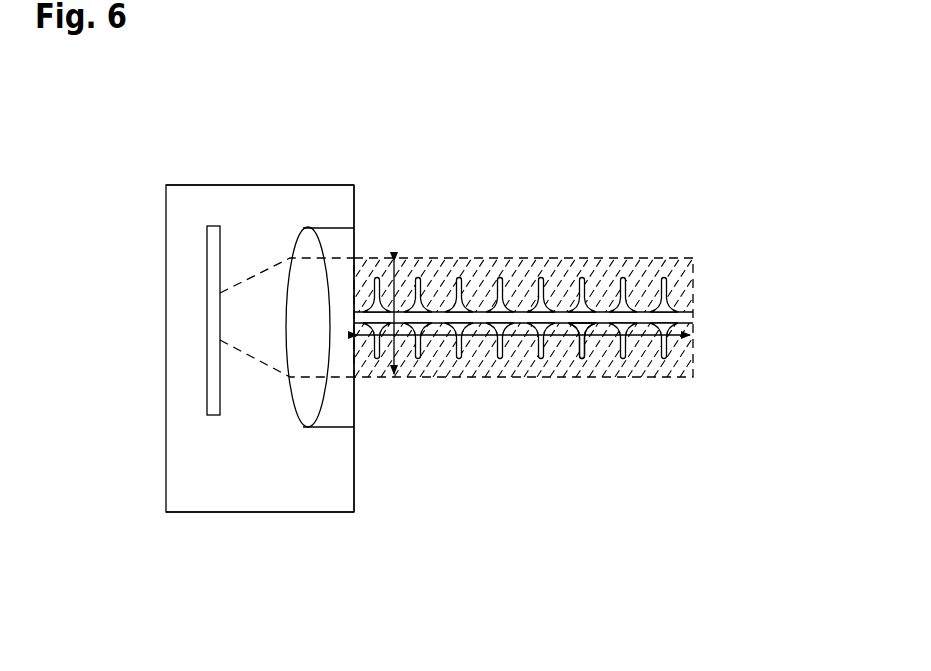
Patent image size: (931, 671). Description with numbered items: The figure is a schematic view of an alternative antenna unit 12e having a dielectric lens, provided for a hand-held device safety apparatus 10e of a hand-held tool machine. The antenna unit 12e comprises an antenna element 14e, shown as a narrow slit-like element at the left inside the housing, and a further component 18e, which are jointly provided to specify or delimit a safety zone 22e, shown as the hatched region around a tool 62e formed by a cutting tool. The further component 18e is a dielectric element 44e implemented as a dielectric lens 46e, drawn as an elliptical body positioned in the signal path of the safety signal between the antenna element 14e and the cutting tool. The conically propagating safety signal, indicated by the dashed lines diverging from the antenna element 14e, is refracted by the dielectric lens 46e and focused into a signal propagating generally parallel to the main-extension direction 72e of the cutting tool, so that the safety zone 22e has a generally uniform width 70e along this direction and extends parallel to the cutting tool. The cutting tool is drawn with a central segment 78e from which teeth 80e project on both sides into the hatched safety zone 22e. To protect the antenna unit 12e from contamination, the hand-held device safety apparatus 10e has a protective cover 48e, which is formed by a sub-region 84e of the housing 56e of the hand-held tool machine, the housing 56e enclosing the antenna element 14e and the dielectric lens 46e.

The hand-held device safety apparatus 10e is at (545, 286).
The antenna unit 12e is at (265, 172).
The antenna element 14e is at (212, 243).
The further component 18e is at (332, 235).
The safety zone 22e is at (553, 287).
The dielectric element 44e is at (340, 413).
The dielectric lens 46e is at (308, 402).
The protective cover 48e is at (243, 498).
The housing 56e is at (355, 507).
The tool 62e is at (645, 318).
The width 70e is at (411, 258).
The main-extension direction 72e is at (595, 335).
The central channel 78e is at (688, 316).
The length of channel 80e is at (670, 348).
The sub-region 84e is at (209, 184).